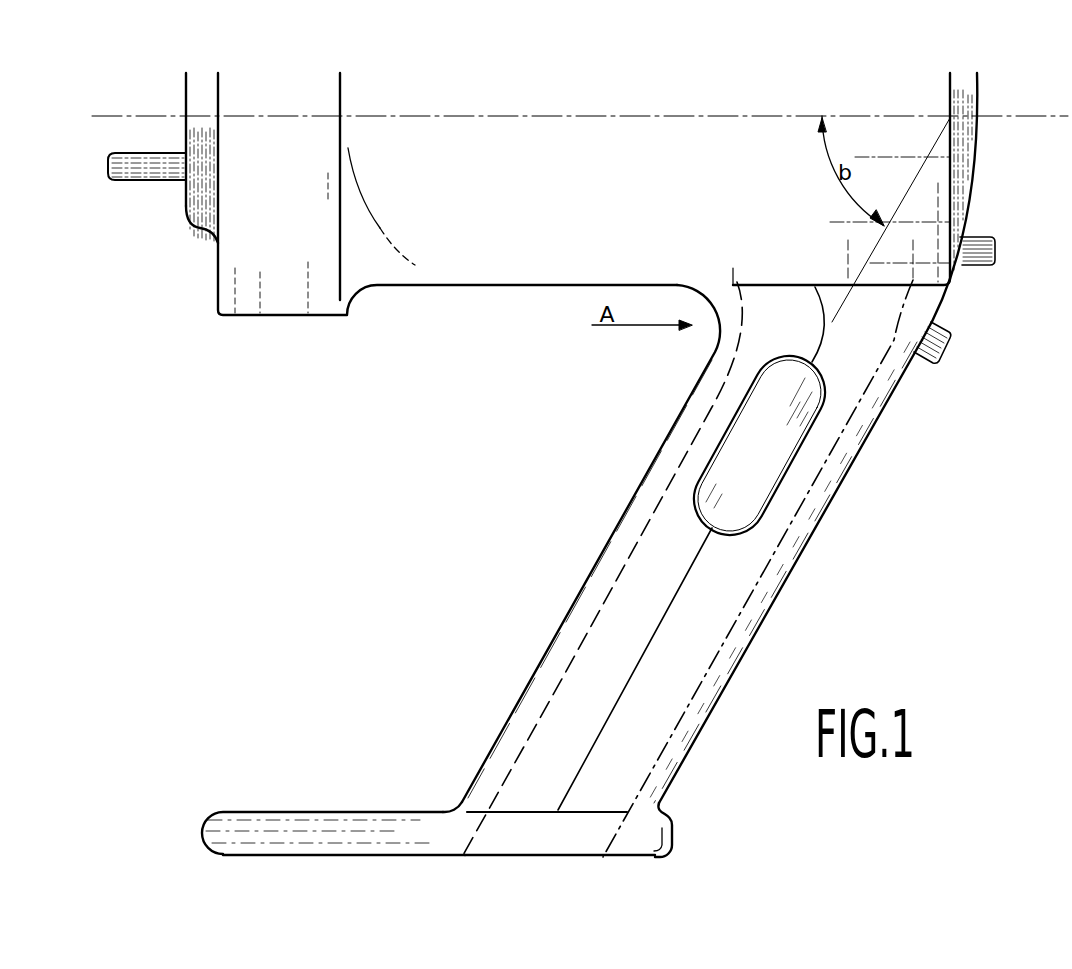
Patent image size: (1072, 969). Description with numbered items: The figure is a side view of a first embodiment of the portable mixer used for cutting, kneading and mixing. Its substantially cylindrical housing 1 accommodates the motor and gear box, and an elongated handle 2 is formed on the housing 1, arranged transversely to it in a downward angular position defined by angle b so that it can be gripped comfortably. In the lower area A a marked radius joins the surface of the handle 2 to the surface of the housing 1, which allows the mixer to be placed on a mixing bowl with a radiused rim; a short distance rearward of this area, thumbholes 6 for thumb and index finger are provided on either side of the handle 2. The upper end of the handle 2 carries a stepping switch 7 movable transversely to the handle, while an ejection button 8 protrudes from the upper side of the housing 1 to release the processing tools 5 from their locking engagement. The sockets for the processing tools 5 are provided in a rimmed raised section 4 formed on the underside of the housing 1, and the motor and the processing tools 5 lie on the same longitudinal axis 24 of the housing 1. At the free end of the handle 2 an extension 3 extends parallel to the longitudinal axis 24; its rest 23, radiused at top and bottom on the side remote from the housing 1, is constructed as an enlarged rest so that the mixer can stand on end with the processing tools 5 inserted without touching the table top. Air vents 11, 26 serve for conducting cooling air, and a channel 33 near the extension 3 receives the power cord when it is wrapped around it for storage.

The housing 1 is at (467, 287).
The handle 2 is at (790, 580).
The extension 3 is at (333, 823).
The raised section 4 is at (200, 215).
The processing tool 5 is at (158, 170).
The thumbholes 6 is at (763, 488).
The stepping switch 7 is at (948, 348).
The ejection button 8 is at (980, 264).
The air vent 11 is at (518, 857).
The rest 23 is at (395, 857).
The longitudinal axis 24 is at (993, 122).
The air vent 26 is at (518, 857).
The channel 33 is at (447, 807).